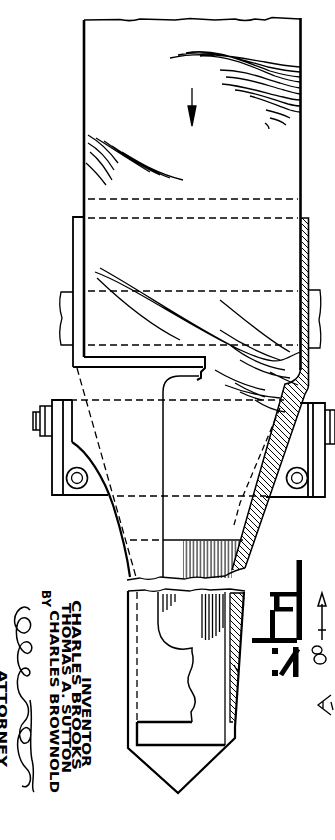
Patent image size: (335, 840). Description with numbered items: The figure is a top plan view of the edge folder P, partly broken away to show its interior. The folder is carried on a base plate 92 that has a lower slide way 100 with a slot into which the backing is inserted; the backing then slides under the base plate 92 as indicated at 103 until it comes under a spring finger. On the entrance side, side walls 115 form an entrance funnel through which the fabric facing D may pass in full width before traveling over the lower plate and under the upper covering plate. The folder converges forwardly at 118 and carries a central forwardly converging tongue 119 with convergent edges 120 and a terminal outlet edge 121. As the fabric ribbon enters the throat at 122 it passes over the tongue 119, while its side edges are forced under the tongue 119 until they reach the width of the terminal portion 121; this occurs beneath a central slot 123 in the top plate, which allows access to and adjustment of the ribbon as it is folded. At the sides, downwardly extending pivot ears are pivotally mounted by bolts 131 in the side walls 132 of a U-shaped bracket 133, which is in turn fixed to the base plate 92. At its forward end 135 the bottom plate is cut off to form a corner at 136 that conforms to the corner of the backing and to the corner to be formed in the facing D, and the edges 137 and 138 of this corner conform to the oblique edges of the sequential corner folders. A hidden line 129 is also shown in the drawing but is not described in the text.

The lower slide way 100 is at (320, 118).
The base plate 92 is at (323, 208).
The backing sliding position 103 is at (322, 282).
The fabric facing D is at (99, 117).
The side walls 115 is at (73, 248).
The throat 122 is at (70, 374).
The central slot 123 is at (156, 458).
The convergent edges 120 is at (124, 563).
The forwardly converging portion 118 is at (253, 560).
The side walls 132 is at (52, 458).
The bolts 131 is at (40, 414).
The U-shaped bracket 133 is at (318, 499).
The terminal outlet edge 121 is at (156, 750).
The hidden edge 129 is at (158, 695).
The tongue 119 is at (172, 622).
The corner edge 138 is at (194, 778).
The corner 136 is at (214, 758).
The forward end 135 is at (236, 739).
The corner edge 137 is at (158, 778).
The edge folder P is at (237, 677).